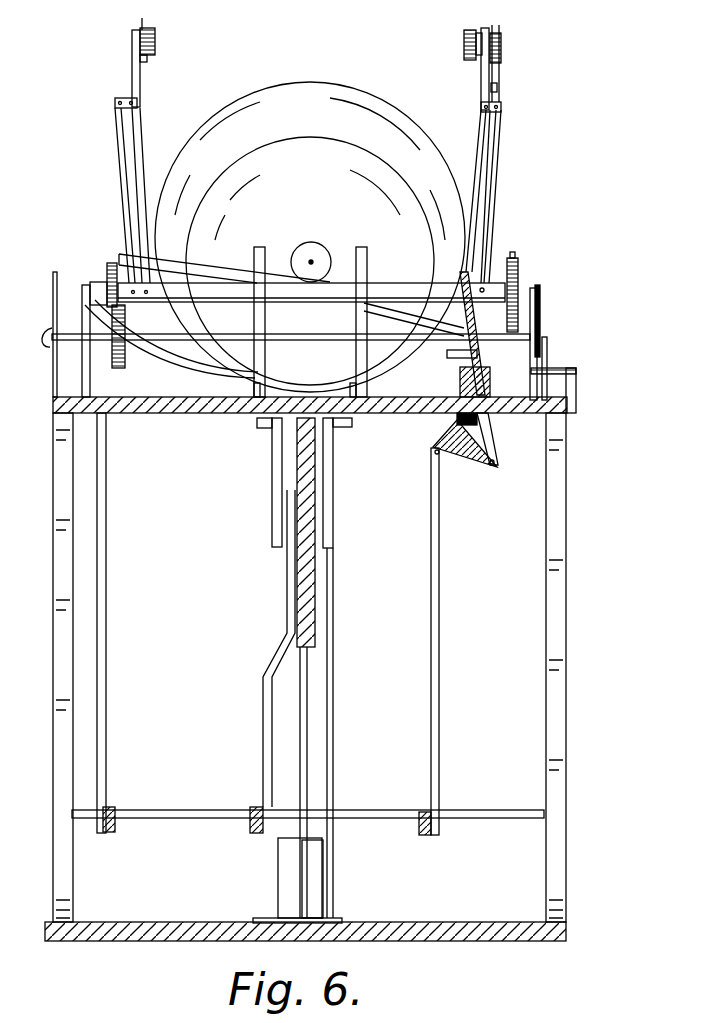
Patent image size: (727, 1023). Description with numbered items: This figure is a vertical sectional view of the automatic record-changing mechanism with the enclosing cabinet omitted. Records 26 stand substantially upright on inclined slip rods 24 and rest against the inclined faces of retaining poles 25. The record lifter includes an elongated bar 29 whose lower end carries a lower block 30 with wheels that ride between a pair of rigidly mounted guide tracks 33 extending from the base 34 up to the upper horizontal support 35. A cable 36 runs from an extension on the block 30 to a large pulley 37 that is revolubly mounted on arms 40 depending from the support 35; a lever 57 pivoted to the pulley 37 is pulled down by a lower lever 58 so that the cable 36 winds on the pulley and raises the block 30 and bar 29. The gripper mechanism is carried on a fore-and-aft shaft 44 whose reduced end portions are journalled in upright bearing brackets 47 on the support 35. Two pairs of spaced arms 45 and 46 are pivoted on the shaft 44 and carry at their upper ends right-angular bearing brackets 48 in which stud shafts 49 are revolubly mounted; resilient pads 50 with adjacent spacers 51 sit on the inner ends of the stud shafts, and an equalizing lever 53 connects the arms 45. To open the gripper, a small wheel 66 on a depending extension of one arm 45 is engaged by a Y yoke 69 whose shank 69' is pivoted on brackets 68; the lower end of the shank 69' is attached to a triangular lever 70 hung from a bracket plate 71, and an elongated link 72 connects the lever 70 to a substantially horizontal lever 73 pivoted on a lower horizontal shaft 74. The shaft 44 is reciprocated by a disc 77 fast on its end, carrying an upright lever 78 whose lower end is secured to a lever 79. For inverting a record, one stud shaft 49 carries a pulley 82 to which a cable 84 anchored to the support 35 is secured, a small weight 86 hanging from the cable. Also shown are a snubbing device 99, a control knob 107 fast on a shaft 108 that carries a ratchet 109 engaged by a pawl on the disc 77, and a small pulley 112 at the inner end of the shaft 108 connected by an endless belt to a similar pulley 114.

The slip rods 24 is at (254, 385).
The retaining poles 25 is at (262, 250).
The records 26 is at (264, 121).
The elongated bar 29 is at (313, 733).
The lower block 30 is at (315, 880).
The guide tracks 33 is at (285, 637).
The base 34 is at (486, 941).
The upper horizontal support 35 is at (385, 414).
The cable 36 is at (302, 852).
The large pulley 37 is at (303, 593).
The arms 40 is at (275, 497).
The shaft 44 is at (228, 296).
The arms 45 is at (138, 146).
The arms 46 is at (121, 150).
The bearing brackets 47 is at (81, 312).
The bearing brackets 48 is at (140, 82).
The stud shafts 49 is at (142, 30).
The pads 50 is at (156, 40).
The spacers 51 is at (148, 60).
The equalizing lever 53 is at (212, 266).
The lever 57 is at (262, 676).
The lower lever 58 is at (256, 833).
The small wheel 66 is at (450, 356).
The brackets 68 is at (457, 413).
The Y yoke 69 is at (442, 304).
The shank 69' is at (508, 439).
The triangular lever 70 is at (470, 457).
The bracket plate 71 is at (457, 420).
The link 72 is at (440, 531).
The horizontal lever 73 is at (422, 812).
The lower horizontal shaft 74 is at (468, 812).
The disc 77 is at (107, 270).
The lever 78 is at (107, 507).
The lever 79 is at (108, 833).
The pulley 82 is at (501, 30).
The cable 84 is at (492, 173).
The small weight 86 is at (498, 88).
The snubbing device 99 is at (466, 381).
The control knob 107 is at (48, 346).
The shaft 108 is at (183, 341).
The ratchet 109 is at (112, 353).
The small pulley 112 is at (545, 330).
The pulley 114 is at (520, 288).